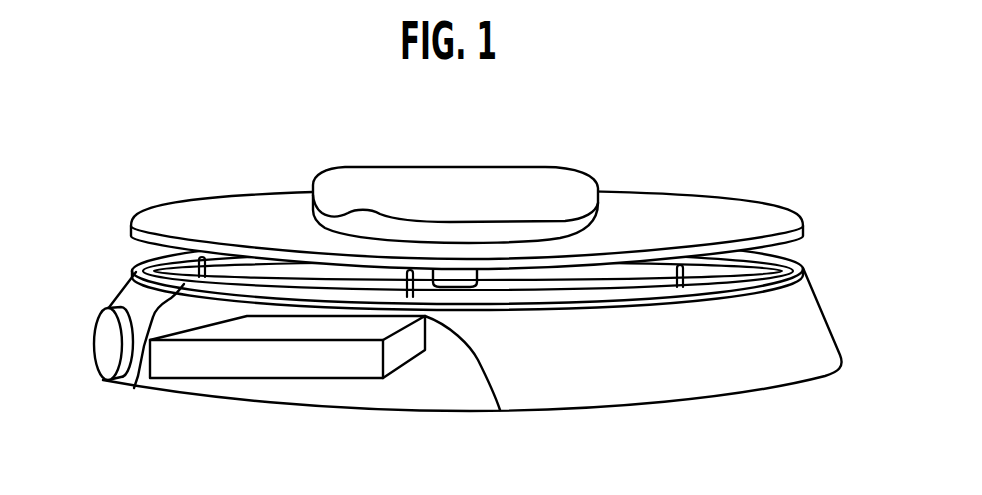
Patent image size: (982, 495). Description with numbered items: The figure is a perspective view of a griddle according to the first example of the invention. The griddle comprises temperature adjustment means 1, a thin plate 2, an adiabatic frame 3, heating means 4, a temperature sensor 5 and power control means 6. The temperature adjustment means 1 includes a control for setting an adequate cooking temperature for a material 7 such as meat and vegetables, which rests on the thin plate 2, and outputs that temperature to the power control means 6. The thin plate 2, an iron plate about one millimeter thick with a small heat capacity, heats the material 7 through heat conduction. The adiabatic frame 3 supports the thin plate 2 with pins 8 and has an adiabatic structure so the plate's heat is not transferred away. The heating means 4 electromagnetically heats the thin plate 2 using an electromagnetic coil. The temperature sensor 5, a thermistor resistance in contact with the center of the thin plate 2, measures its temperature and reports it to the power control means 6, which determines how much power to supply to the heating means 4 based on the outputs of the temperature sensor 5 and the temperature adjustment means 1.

The temperature adjustment means 1 is at (103, 379).
The thin plate 2 is at (645, 210).
The adiabatic frame 3 is at (618, 368).
The heating means 4 is at (133, 266).
The temperature sensor 5 is at (460, 284).
The power control means 6 is at (307, 357).
The material 7 is at (534, 188).
The pins 8 is at (803, 268).